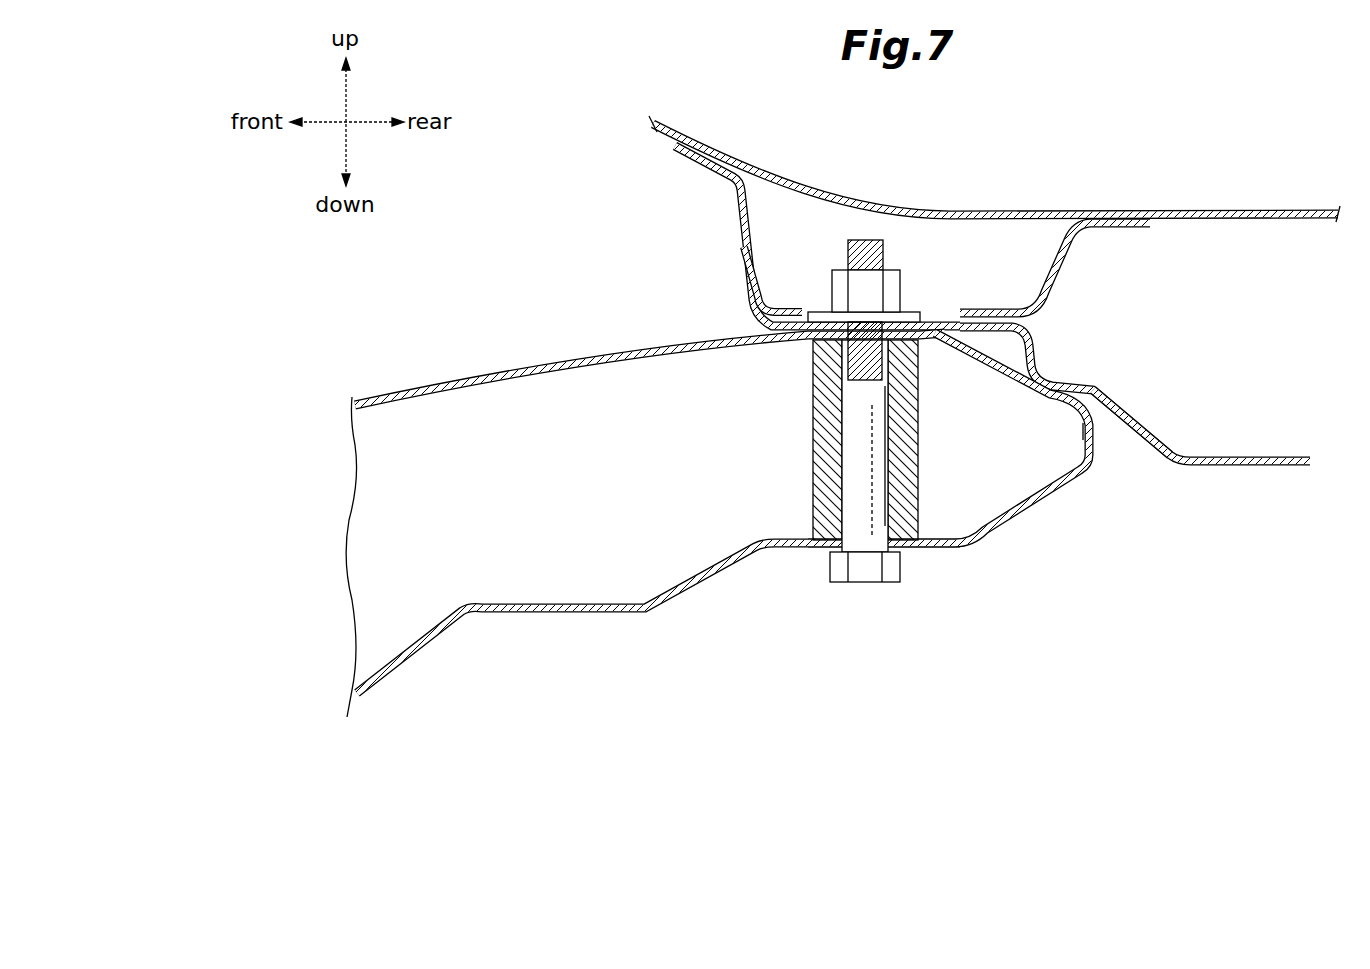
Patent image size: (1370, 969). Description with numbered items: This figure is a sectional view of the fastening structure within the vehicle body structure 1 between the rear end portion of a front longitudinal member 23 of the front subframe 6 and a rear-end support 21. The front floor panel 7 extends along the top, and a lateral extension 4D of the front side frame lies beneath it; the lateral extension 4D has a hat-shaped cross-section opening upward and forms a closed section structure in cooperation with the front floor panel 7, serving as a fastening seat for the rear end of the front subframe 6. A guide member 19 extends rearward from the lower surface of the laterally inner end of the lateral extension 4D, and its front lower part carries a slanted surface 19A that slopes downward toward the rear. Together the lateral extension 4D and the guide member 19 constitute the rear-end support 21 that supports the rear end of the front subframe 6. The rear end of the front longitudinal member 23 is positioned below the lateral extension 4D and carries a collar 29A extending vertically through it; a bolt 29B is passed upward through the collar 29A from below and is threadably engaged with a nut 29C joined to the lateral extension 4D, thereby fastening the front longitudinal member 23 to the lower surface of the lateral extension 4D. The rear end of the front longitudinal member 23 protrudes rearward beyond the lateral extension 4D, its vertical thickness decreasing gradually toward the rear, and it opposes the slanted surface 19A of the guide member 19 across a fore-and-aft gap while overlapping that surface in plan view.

The vehicle body structure 1 is at (1251, 187).
The lateral extension 4D is at (1063, 262).
The front subframe 6 is at (653, 510).
The front floor panel 7 is at (1283, 219).
The guide member 19 is at (1200, 465).
The slanted surface 19A is at (1148, 446).
The rear-end support 21 is at (1010, 523).
The front longitudinal member 23 is at (533, 368).
The collar 29A is at (813, 450).
The bolt 29B is at (862, 575).
The nut 29C is at (888, 284).